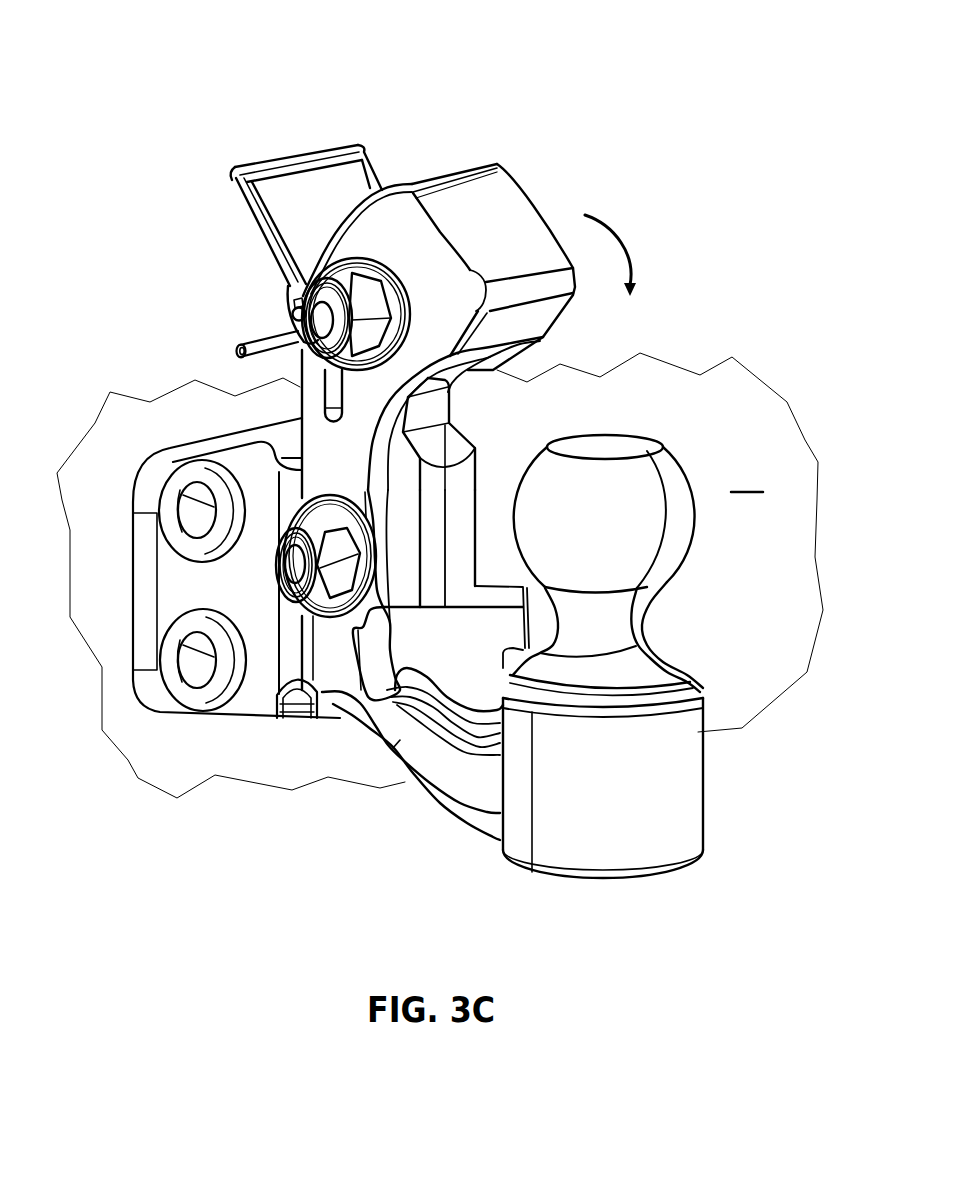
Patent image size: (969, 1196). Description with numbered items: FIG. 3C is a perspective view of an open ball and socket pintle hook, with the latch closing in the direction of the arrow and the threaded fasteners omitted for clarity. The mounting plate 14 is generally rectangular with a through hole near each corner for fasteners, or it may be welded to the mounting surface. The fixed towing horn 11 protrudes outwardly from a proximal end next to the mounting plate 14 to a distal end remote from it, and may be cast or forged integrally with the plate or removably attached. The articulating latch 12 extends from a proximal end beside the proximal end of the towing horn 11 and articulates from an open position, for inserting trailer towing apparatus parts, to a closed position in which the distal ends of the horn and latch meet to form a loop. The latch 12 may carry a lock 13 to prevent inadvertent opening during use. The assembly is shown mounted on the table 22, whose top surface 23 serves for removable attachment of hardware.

The towing horn 11 is at (622, 535).
The articulating latch 12 is at (495, 232).
The lock 13 is at (298, 160).
The mounting plate 14 is at (257, 486).
The table 22 is at (718, 405).
The top surface 23 is at (746, 476).